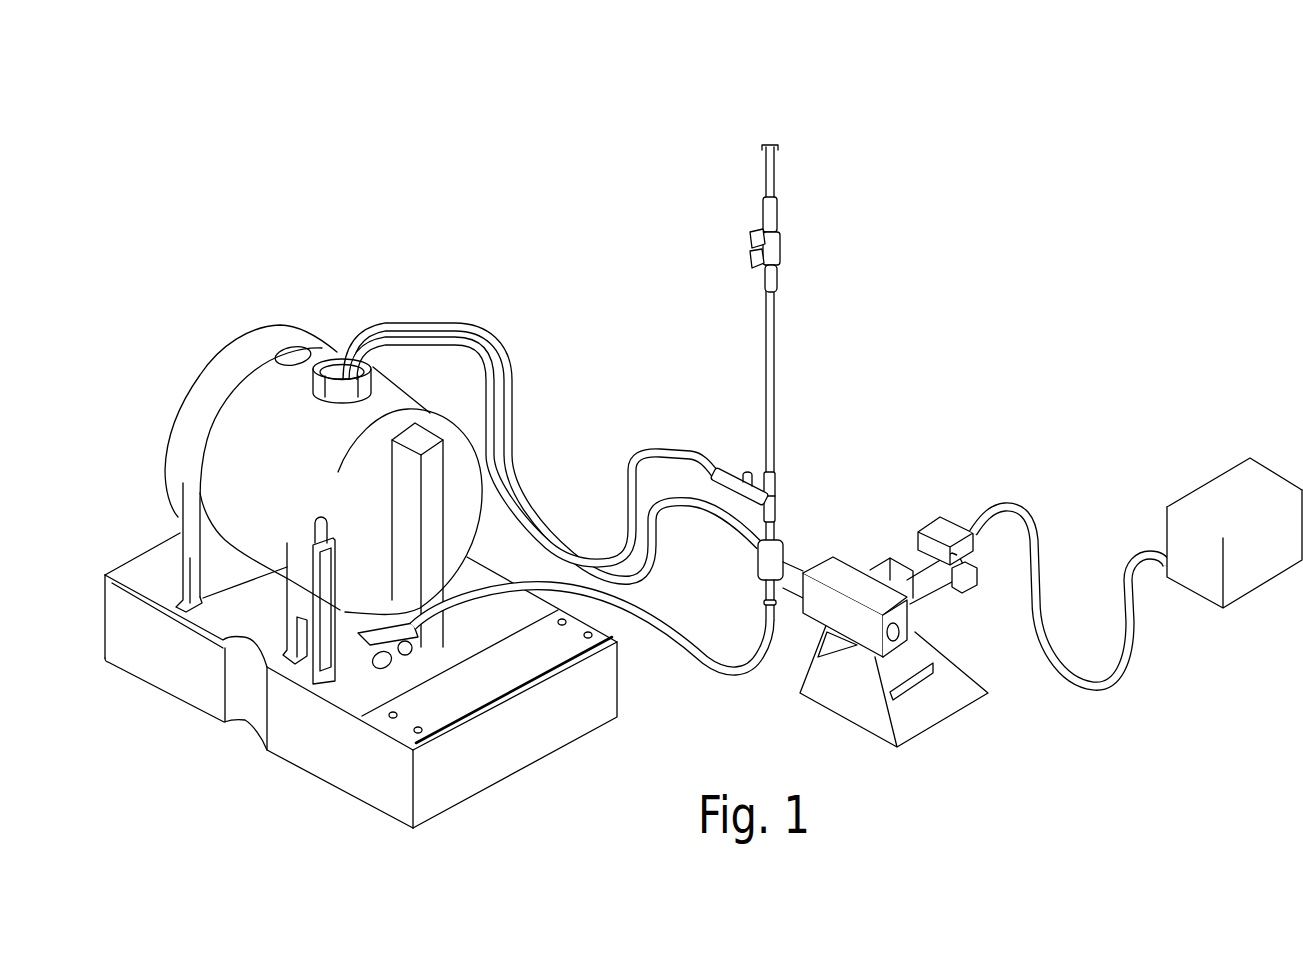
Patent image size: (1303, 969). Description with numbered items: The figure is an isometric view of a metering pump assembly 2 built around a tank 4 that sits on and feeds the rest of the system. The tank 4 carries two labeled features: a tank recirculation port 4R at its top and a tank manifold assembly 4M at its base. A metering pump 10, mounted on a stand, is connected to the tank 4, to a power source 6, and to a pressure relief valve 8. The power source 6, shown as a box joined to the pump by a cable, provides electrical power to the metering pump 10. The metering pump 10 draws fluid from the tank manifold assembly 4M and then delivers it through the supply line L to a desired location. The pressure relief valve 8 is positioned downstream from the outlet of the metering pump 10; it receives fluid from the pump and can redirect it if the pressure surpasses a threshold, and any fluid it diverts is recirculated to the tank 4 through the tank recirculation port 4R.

The metering pump assembly 2 is at (325, 138).
The tank 4 is at (299, 238).
The tank recirculation port 4R is at (355, 305).
The tank manifold assembly 4M is at (323, 698).
The power source 6 is at (1252, 434).
The pressure relief valve 8 is at (748, 450).
The metering pump 10 is at (876, 526).
The supply line L is at (777, 176).